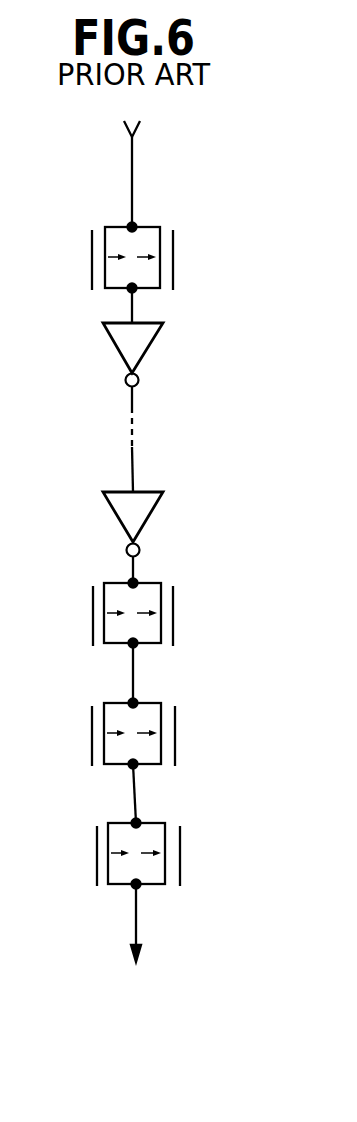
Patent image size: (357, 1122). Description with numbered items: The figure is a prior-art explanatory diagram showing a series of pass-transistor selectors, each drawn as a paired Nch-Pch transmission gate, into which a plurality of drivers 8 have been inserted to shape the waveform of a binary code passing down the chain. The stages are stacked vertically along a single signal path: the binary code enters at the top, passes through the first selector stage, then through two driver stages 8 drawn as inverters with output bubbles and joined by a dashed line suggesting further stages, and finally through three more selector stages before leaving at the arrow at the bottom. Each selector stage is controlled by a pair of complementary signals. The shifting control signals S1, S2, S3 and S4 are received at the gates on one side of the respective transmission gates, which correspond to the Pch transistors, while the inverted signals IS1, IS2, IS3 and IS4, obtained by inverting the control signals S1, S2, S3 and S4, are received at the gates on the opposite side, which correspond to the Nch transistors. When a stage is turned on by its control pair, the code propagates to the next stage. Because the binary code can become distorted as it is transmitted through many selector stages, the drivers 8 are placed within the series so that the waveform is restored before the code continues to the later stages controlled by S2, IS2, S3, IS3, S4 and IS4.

The driver 8 is at (151, 352).
The shifting control signal S1 is at (92, 257).
The shifting control signal S2 is at (93, 613).
The shifting control signal S3 is at (92, 733).
The shifting control signal S4 is at (97, 853).
The inverted signal IS1 is at (173, 257).
The inverted signal IS2 is at (173, 613).
The inverted signal IS3 is at (175, 733).
The inverted signal IS4 is at (180, 853).